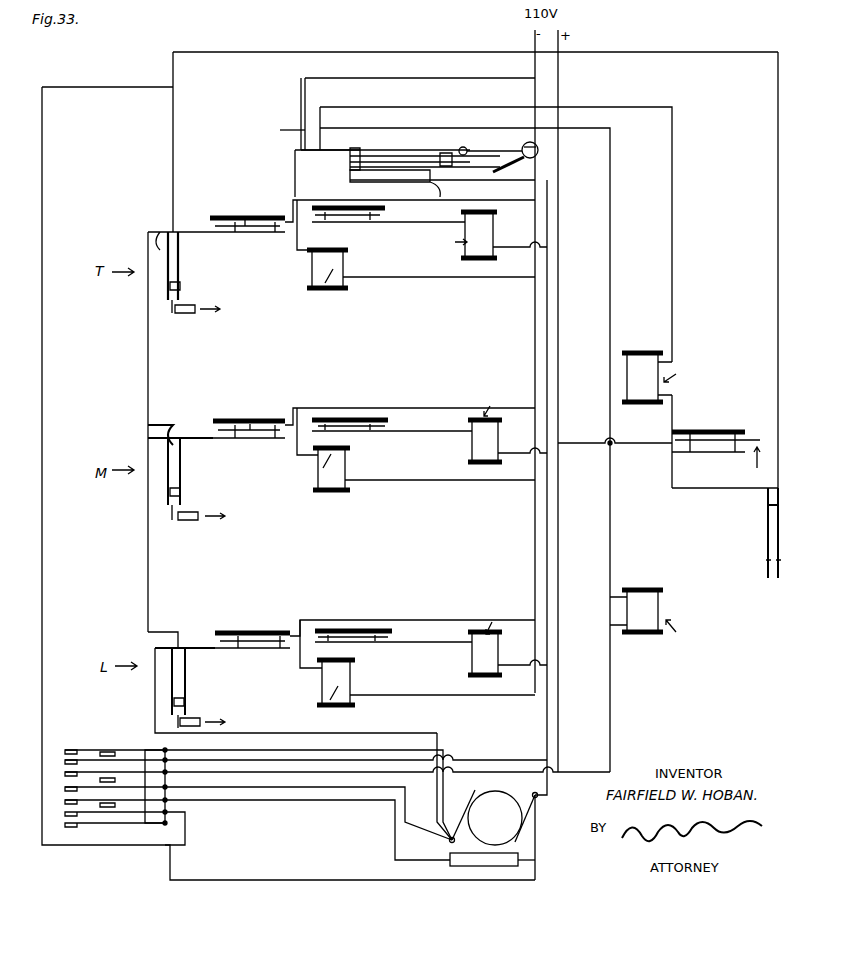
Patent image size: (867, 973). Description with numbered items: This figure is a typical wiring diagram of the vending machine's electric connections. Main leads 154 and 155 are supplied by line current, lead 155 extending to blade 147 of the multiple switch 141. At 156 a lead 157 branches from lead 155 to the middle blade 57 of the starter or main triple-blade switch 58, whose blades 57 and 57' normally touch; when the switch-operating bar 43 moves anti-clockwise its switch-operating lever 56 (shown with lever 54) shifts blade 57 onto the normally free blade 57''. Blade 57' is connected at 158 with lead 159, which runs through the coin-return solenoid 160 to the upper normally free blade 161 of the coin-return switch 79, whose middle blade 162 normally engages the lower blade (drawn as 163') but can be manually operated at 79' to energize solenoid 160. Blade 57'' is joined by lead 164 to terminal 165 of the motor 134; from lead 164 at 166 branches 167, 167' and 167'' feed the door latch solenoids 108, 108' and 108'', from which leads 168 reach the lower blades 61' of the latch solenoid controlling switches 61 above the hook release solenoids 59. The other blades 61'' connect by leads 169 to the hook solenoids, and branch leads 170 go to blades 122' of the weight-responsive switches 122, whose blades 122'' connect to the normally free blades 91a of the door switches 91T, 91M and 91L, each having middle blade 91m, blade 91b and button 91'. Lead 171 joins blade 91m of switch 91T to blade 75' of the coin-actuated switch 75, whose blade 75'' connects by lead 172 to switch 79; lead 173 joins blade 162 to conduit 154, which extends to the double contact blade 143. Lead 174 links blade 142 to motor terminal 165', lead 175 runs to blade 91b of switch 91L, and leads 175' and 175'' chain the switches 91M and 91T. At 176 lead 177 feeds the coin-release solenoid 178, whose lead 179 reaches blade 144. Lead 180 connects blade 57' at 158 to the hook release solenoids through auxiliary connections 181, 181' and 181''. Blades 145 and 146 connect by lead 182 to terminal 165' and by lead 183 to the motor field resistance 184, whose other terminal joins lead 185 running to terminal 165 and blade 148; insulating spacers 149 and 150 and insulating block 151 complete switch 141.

The main lead 155 is at (114, 90).
The lead 171 is at (283, 54).
The main lead 154 is at (568, 42).
The branch point 156 is at (312, 83).
The lead 157 is at (299, 108).
The lead 159 is at (318, 107).
The connection point 176 is at (277, 130).
The lead 177 is at (490, 134).
The lead 180 is at (294, 160).
The connection point 158 is at (318, 148).
The starter or main triple-blade switch 58 is at (415, 148).
The switch blade 57' is at (376, 149).
The middle blade 57 is at (456, 169).
The switch-operating lever 56 is at (479, 150).
The lever 54 is at (502, 171).
The switch-operating bar 43 is at (532, 166).
The normally free blade 57'' is at (405, 194).
The lead 175'' is at (125, 432).
The switch blade 91b is at (160, 228).
The door detent-operated door switch 91T is at (186, 278).
The normally free blade 91a is at (182, 290).
The middle blade 91m is at (172, 314).
The switch button 91' is at (206, 515).
The branch lead 170 is at (218, 216).
The switch blade 122' is at (258, 310).
The switch blade 122'' is at (242, 452).
The weight-responsive switch 122 is at (278, 458).
The lead 169 is at (288, 194).
The switch blade 61'' is at (344, 423).
The lower blade 61' is at (351, 442).
The latch solenoid controlling switch 61 is at (362, 441).
The lead 168 is at (416, 224).
The lead 164 is at (494, 178).
The door latch solenoid 108 is at (462, 235).
The door latch solenoid 108' is at (494, 425).
The door latch solenoid 108'' is at (485, 639).
The branch point 166 is at (554, 248).
The branch 167 is at (511, 256).
The branch 167' is at (510, 469).
The branch 167'' is at (512, 684).
The hook release solenoid 59 is at (334, 273).
The auxiliary connection 181 is at (439, 289).
The auxiliary connection 181' is at (440, 496).
The auxiliary connection 181'' is at (442, 709).
The lead 175' is at (124, 564).
The door detent-operated door switch 91M is at (190, 490).
The lead 175 is at (269, 684).
The door detent-operated door switch 91L is at (190, 693).
The insulating block 151 is at (122, 723).
The coin-return solenoid 160 is at (646, 352).
The lead 173 is at (634, 442).
The upper normally free blade 161 is at (692, 432).
The coin-return switch 79 is at (716, 441).
The manual operating point 79' is at (780, 451).
The contact 163' is at (695, 463).
The middle blade 162 is at (728, 448).
The lead 172 is at (724, 492).
The coin-actuated switch 75 is at (751, 533).
The switch blade 75' is at (796, 535).
The switch blade 75'' is at (741, 528).
The coin-release solenoid 178 is at (669, 608).
The lead 179 is at (612, 722).
The lead 174 is at (396, 736).
The lead 182 is at (298, 812).
The lead 183 is at (369, 802).
The lead 185 is at (322, 864).
The motor field resistance 184 is at (527, 862).
The motor 134 is at (495, 818).
The motor terminal 165' is at (465, 806).
The motor terminal 165 is at (524, 806).
The multiple switch 141 is at (202, 814).
The switch blade 142 is at (80, 750).
The double contact blade 143 is at (104, 756).
The insulating spacer 149 is at (128, 766).
The switch blade 144 is at (64, 774).
The switch blade 145 is at (64, 788).
The switch blade 146 is at (64, 802).
The switch blade 147 is at (62, 814).
The switch blade 148 is at (72, 828).
The insulating spacer 150 is at (127, 812).